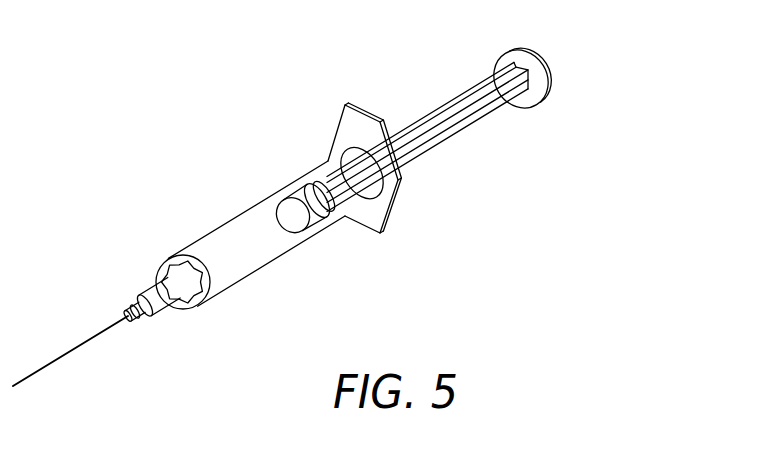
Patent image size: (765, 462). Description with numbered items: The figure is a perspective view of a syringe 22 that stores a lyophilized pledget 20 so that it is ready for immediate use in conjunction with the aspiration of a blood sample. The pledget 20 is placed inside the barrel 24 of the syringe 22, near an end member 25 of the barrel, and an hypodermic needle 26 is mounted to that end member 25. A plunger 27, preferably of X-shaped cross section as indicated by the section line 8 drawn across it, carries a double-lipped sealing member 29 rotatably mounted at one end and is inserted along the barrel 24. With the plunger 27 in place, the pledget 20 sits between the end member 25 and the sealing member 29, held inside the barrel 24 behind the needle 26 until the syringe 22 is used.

The section line 8- 8 is at (466, 108).
The pledget 20 is at (204, 300).
The syringe 22 is at (290, 208).
The barrel 24 is at (164, 263).
The end member 25 is at (180, 306).
The hypodermic needle 26 is at (31, 378).
The plunger 27 is at (507, 108).
The double-lipped sealing member 29 is at (213, 229).